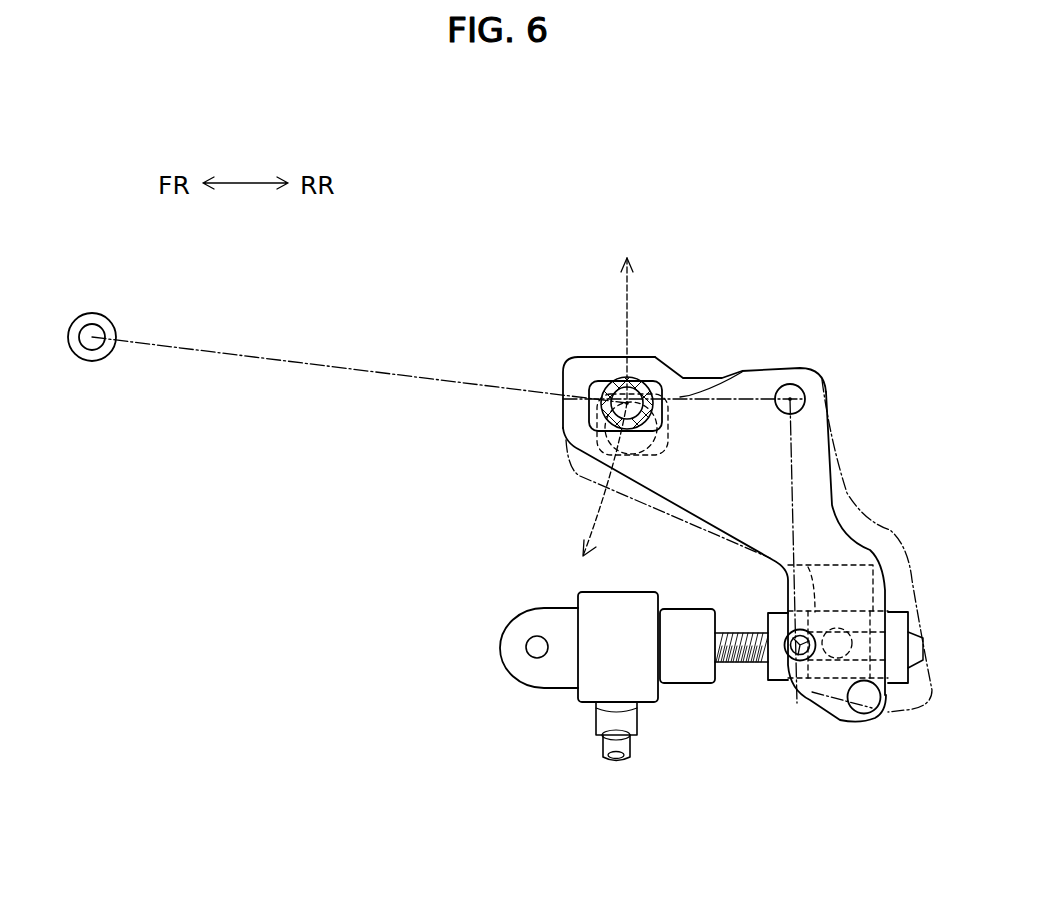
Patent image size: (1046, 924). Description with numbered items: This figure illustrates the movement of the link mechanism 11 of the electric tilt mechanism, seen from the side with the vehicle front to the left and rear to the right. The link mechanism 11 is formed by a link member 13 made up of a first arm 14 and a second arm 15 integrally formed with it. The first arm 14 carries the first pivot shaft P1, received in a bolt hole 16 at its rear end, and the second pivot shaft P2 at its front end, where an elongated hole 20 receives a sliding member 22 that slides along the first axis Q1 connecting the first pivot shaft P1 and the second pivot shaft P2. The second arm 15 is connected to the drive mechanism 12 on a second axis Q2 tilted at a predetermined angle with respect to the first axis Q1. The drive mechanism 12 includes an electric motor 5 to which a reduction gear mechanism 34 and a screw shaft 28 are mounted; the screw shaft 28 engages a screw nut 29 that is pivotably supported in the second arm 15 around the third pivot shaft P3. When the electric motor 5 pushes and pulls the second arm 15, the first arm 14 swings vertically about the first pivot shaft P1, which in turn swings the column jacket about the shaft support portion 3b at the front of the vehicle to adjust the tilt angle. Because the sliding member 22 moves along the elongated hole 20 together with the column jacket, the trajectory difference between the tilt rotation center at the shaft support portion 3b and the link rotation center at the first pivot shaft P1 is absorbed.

The shaft support portion 3b is at (92, 345).
The electric motor 5 is at (597, 718).
The link mechanism 11 is at (543, 353).
The drive mechanism 12 is at (511, 595).
The link member 13 is at (826, 350).
The first arm 14 is at (709, 378).
The second arm 15 is at (820, 466).
The bolt hole 16 is at (787, 382).
The elongated hole 20 is at (598, 381).
The sliding member 22 is at (590, 397).
The screw shaft 28 is at (733, 664).
The screw nut 29 is at (773, 611).
The reduction gear mechanism 34 is at (625, 600).
The first pivot shaft P1 is at (805, 393).
The second pivot shaft P2 is at (662, 414).
The third pivot shaft P3 is at (794, 668).
The first axis Q1 is at (742, 402).
The second axis Q2 is at (791, 527).